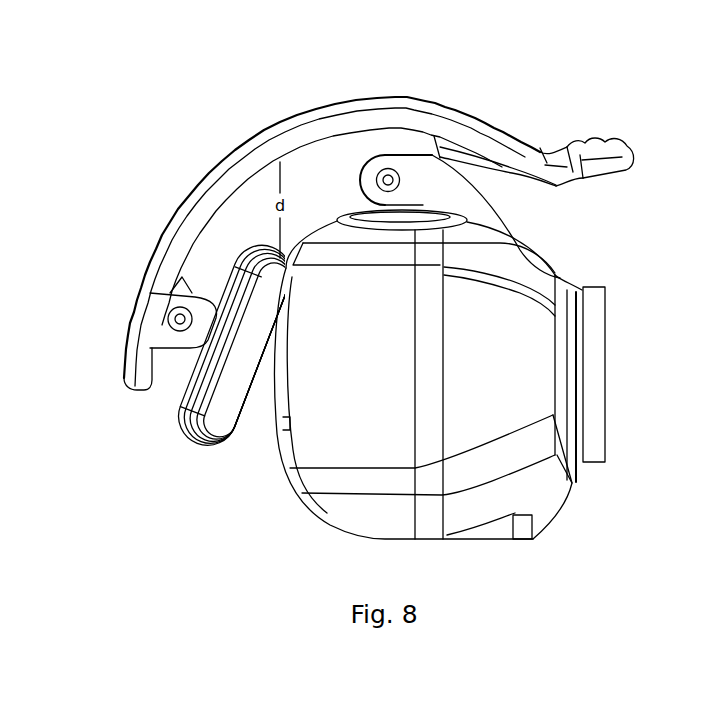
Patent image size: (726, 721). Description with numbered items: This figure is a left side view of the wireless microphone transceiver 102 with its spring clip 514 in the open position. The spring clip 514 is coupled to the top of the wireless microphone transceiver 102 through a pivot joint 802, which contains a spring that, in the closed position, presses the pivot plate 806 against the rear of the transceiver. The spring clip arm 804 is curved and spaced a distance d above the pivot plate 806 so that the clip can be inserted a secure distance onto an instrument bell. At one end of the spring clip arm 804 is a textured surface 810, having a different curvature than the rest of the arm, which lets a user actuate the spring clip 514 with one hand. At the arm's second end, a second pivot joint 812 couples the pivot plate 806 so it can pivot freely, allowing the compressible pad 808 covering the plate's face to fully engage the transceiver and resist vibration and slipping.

The wireless microphone transceiver 102 is at (305, 525).
The spring clip 514 is at (520, 136).
The pivot joint 802 is at (420, 165).
The spring clip arm 804 is at (290, 140).
The pivot plate 806 is at (183, 412).
The pad 808 is at (216, 422).
The textured surface 810 is at (610, 175).
The second pivot joint 812 is at (168, 328).